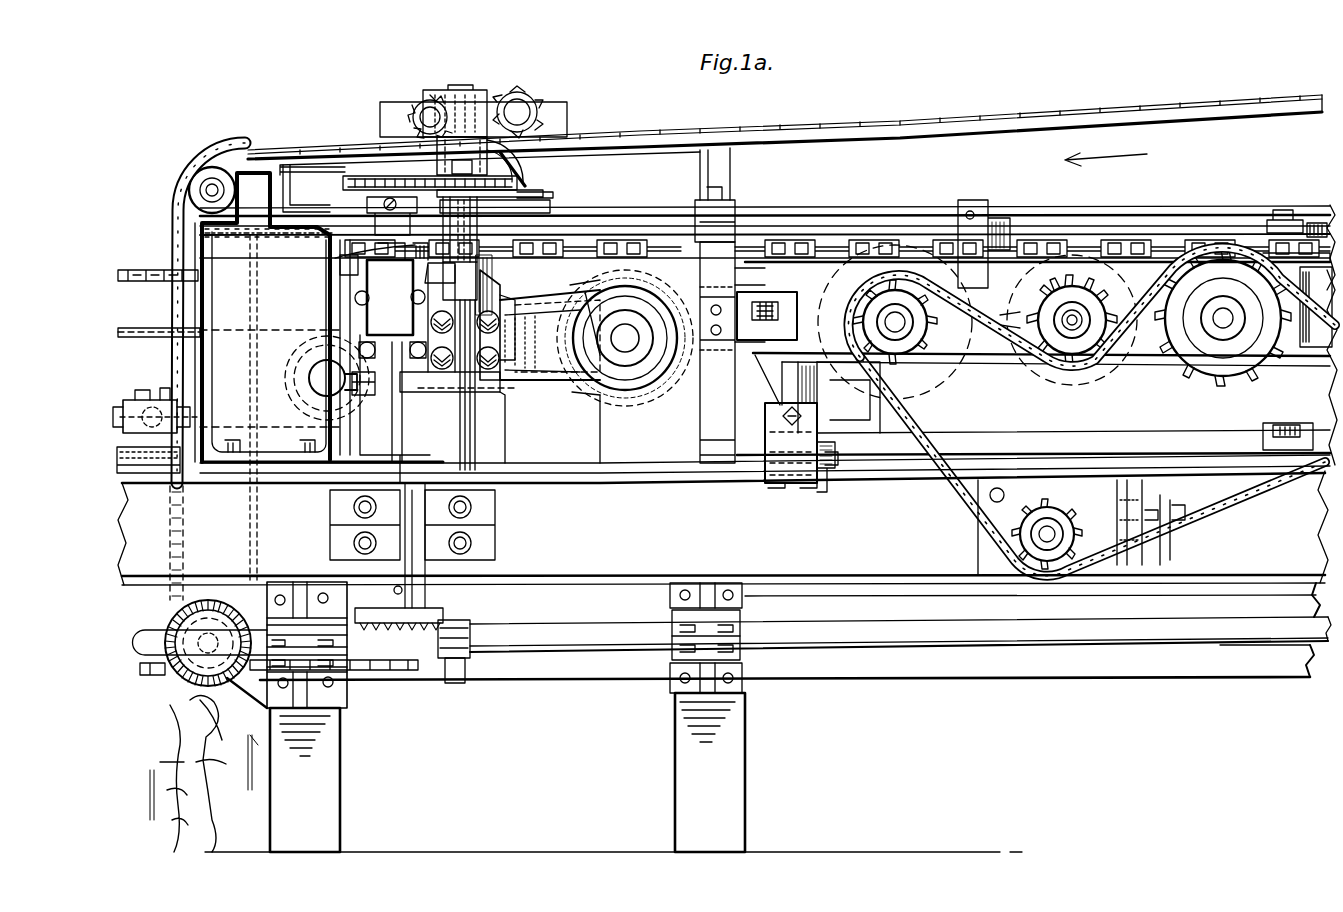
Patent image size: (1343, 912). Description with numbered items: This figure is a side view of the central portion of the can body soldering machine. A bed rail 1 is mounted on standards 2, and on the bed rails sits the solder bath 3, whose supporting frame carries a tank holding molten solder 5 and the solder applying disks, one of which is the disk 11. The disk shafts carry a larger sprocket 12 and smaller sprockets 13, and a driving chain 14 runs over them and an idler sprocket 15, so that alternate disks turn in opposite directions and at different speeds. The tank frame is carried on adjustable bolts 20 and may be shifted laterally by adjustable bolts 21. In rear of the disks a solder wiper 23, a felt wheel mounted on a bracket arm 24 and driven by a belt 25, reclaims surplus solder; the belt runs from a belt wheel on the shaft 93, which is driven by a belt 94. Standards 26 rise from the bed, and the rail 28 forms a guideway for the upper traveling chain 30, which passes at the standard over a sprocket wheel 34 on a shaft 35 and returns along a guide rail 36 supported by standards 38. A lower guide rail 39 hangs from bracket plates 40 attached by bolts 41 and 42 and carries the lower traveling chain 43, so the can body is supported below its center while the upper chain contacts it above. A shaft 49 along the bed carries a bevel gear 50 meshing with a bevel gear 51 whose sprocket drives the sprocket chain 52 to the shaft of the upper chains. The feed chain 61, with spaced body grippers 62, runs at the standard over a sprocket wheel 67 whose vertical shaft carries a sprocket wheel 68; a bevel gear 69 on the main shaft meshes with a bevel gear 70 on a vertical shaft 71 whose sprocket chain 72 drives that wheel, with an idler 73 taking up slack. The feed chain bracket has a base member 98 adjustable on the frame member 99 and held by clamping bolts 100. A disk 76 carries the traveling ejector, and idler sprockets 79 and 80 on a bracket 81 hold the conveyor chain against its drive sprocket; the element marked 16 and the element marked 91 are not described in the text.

The bed rail 1 is at (723, 539).
The standards 2 is at (507, 717).
The solder bath 3 is at (1010, 362).
The molten solder 5 is at (458, 80).
The solder applying disk 11 is at (1000, 345).
The sprocket 12 is at (1250, 372).
The sprockets 13 is at (955, 350).
The driving chain 14 is at (965, 388).
The idler sprocket 15 is at (1055, 512).
The bracket 16 is at (852, 330).
The adjustable bolts 20 is at (838, 490).
The adjustable bolts 21 is at (790, 425).
The solder wiper 23 is at (630, 395).
The bracket arm 24 is at (548, 370).
The belt 25 is at (582, 385).
The standards 26 is at (319, 372).
The rail 28 is at (833, 226).
The traveling chain 30 is at (732, 133).
The sprocket wheel 34 is at (208, 165).
The shaft 35 is at (215, 190).
The guide rail 36 is at (1094, 118).
The standards 38 is at (705, 412).
The guide rail 39 is at (842, 278).
The bracket plates 40 is at (970, 208).
The bolts 41 is at (998, 215).
The bolts 42 is at (1015, 290).
The traveling chain 43 is at (142, 272).
The shaft 49 is at (980, 655).
The bevel gear 50 is at (282, 600).
The bevel gear 51 is at (210, 600).
The sprocket chain 52 is at (172, 378).
The feed chain 61 is at (735, 228).
The body grippers 62 is at (650, 245).
The sprocket wheel 67 is at (335, 260).
The sprocket wheel 68 is at (560, 193).
The bevel gear 69 is at (466, 668).
The bevel gear 70 is at (448, 603).
The vertical shaft 71 is at (400, 430).
The sprocket chain 72 is at (440, 190).
The idler 73 is at (535, 170).
The disk 76 is at (588, 152).
The idler sprocket 79 is at (412, 102).
The idler sprocket 80 is at (538, 103).
The bracket 81 is at (555, 125).
The plate 91 is at (500, 330).
The shaft 93 is at (315, 360).
The belt 94 is at (145, 326).
The base member 98 is at (433, 319).
The frame member 99 is at (440, 400).
The clamping bolts 100 is at (515, 340).